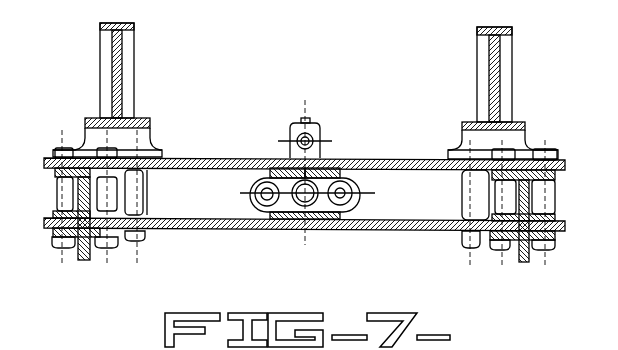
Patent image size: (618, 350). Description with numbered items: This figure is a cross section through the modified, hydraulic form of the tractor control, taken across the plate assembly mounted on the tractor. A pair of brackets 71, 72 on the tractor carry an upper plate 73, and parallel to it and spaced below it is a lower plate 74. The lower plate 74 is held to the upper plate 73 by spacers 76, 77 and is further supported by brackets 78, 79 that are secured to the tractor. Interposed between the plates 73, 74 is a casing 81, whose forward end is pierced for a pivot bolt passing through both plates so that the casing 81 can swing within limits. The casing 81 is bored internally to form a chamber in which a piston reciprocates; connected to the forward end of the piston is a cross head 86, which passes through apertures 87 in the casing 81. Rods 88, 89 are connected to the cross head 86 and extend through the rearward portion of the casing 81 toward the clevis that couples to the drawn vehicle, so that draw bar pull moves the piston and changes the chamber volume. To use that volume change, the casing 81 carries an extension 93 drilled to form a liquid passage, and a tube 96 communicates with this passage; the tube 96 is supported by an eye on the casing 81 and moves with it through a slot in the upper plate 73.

The bracket 71 is at (103, 71).
The bracket 72 is at (505, 80).
The upper plate 73 is at (186, 162).
The lower plate 74 is at (190, 229).
The spacer 76 is at (70, 190).
The spacer 77 is at (535, 197).
The bracket 78 is at (80, 262).
The bracket 79 is at (527, 263).
The casing 81 is at (340, 175).
The cross head 86 is at (357, 205).
The apertures 87 is at (281, 172).
The rod 88 is at (255, 190).
The rod 89 is at (352, 190).
The extension 93 is at (313, 127).
The tube 96 is at (318, 142).